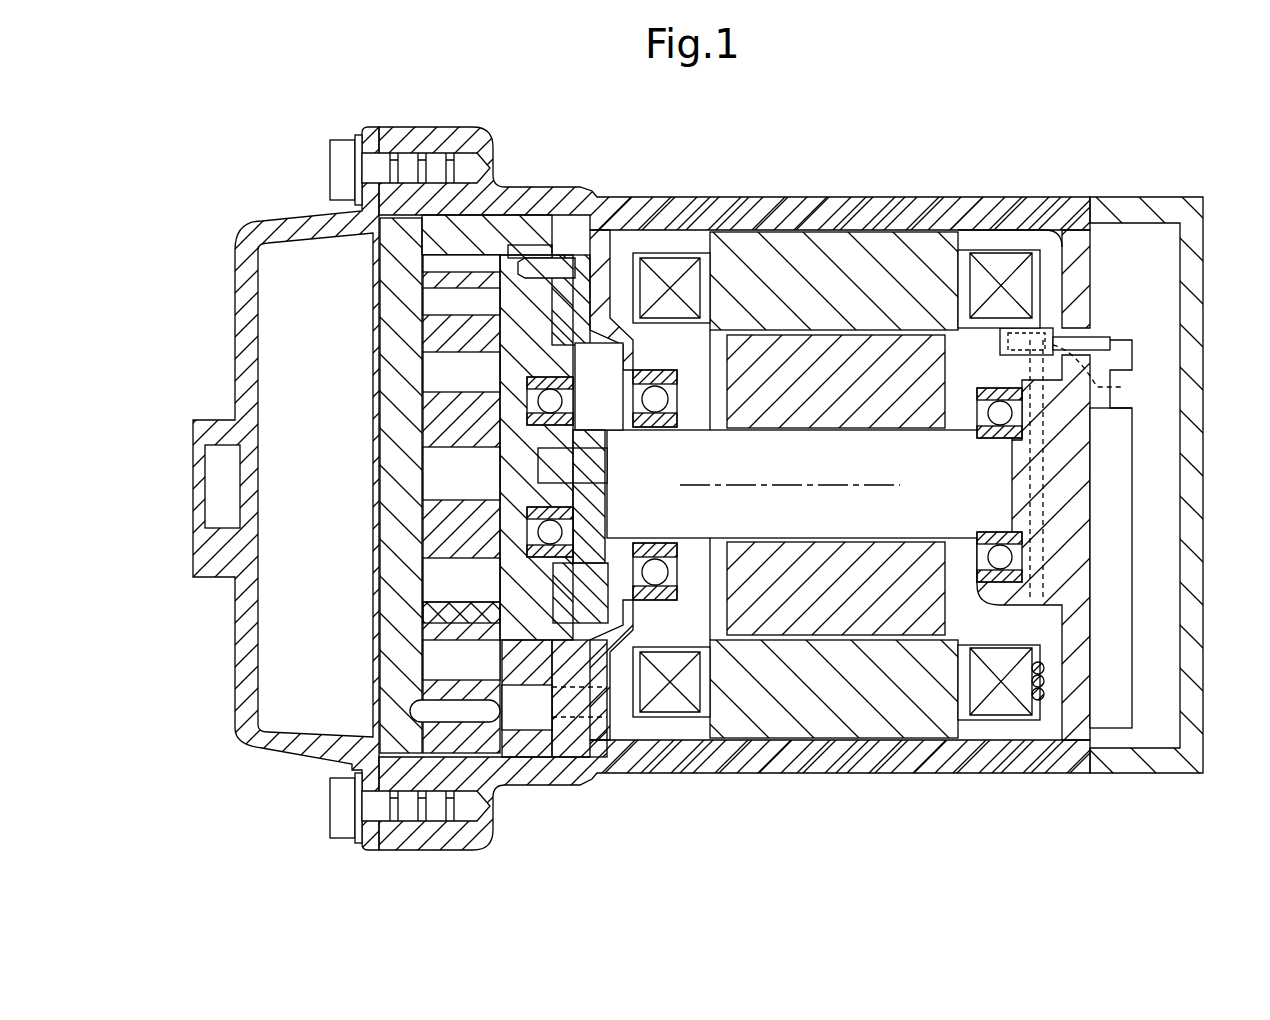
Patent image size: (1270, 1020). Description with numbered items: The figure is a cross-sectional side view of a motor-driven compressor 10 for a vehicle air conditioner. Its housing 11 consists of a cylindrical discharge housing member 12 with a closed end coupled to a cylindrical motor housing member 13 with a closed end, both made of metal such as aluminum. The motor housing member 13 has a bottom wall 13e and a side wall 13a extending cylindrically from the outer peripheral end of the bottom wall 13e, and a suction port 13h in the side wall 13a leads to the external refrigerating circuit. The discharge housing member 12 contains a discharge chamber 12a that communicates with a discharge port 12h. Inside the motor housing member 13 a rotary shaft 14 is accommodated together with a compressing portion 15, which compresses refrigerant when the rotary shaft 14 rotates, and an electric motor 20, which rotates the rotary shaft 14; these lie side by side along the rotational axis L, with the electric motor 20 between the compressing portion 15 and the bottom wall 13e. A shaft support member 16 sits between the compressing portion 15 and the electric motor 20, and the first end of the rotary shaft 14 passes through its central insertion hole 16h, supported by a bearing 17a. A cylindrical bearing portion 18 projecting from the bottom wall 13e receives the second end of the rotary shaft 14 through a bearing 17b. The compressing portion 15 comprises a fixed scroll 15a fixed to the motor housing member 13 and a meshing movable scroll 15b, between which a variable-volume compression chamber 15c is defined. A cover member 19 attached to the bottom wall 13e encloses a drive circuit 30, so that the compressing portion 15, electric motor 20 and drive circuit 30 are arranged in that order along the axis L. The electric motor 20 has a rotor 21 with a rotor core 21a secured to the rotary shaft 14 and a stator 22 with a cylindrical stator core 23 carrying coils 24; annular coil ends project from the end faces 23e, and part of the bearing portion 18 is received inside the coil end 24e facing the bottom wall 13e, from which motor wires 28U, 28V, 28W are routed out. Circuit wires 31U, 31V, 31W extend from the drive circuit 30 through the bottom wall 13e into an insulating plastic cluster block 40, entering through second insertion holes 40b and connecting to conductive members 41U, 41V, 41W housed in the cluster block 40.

The motor-driven compressor 10 is at (212, 152).
The housing 11 is at (547, 212).
The discharge housing member 12 is at (290, 215).
The discharge port 12h is at (220, 485).
The discharge chamber 12a is at (332, 630).
The motor housing member 13 is at (607, 200).
The side wall 13a is at (845, 207).
The suction port 13h is at (1000, 200).
The bottom wall 13e is at (1092, 345).
The rotary shaft 14 is at (858, 540).
The compressing portion 15 is at (548, 210).
The fixed scroll 15a is at (395, 320).
The movable scroll 15b is at (435, 405).
The compression chamber 15c is at (455, 473).
The shaft support member 16 is at (563, 748).
The insertion hole 16h is at (628, 545).
The bearing 17a is at (665, 430).
The bearing 17b is at (995, 440).
The bearing portion 18 is at (990, 598).
The cover member 19 is at (1190, 540).
The electric motor 20 is at (777, 228).
The rotor 21 is at (797, 638).
The rotor core 21a is at (862, 638).
The stator 22 is at (780, 742).
The stator core 23 is at (850, 742).
The end faces 23e is at (703, 735).
The coils 24 is at (660, 712).
The coil end 24e is at (1010, 720).
The motor wire 28U is at (1045, 694).
The motor wire 28V is at (1045, 681).
The motor wire 28W is at (1045, 668).
The drive circuit 30 is at (1120, 492).
The circuit wire 31U is at (1176, 276).
The circuit wire 31V is at (1176, 276).
The circuit wire 31W is at (1108, 333).
The cluster block 40 is at (1000, 342).
The second insertion holes 40b is at (1110, 372).
The conductive member 41U is at (1098, 228).
The conductive member 41V is at (1098, 228).
The conductive member 41W is at (1045, 328).
The rotational axis L is at (775, 487).